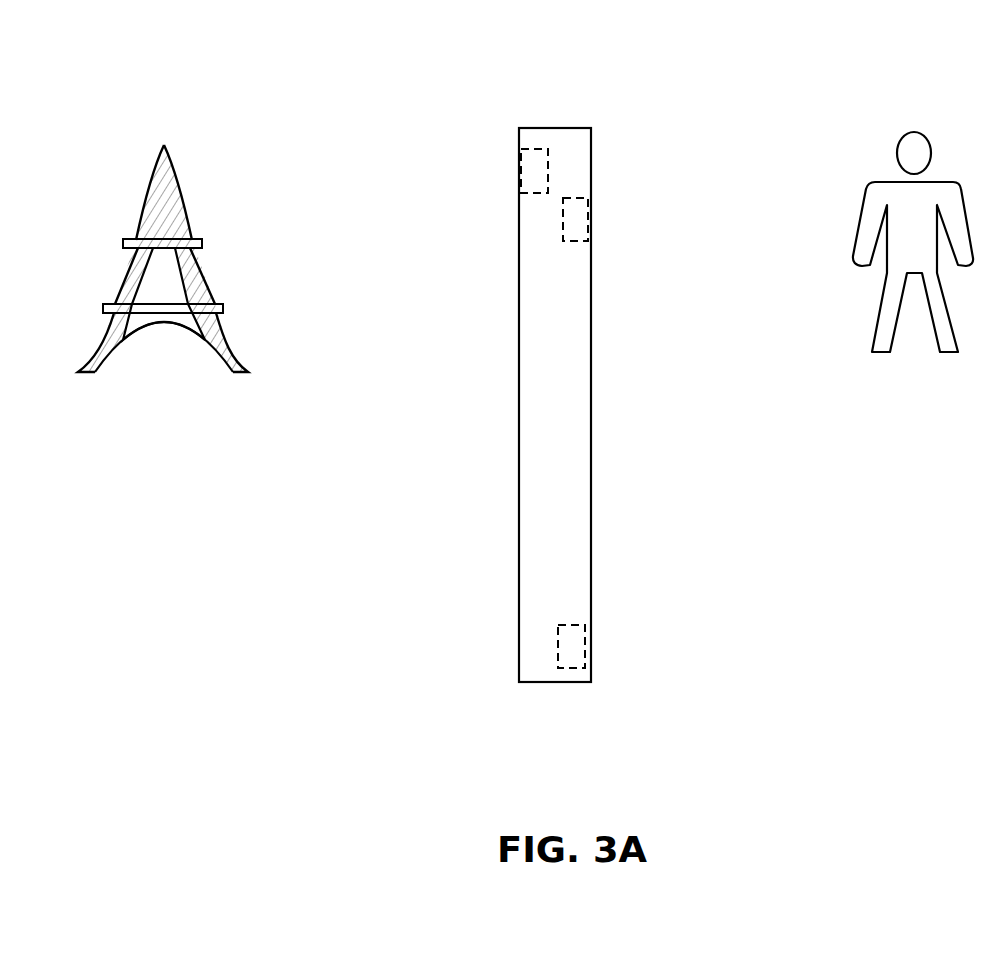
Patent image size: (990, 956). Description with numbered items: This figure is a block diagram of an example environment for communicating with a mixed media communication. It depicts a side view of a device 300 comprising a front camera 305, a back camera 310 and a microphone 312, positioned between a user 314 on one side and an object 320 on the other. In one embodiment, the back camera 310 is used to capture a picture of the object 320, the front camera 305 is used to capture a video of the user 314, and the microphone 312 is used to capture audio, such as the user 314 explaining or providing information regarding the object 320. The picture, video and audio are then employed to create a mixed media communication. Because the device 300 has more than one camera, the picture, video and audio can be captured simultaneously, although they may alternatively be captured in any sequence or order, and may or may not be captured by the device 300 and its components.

The device 300 is at (555, 118).
The front camera 305 is at (600, 218).
The back camera 310 is at (512, 170).
The microphone 312 is at (600, 648).
The user 314 is at (913, 260).
The object 320 is at (163, 271).